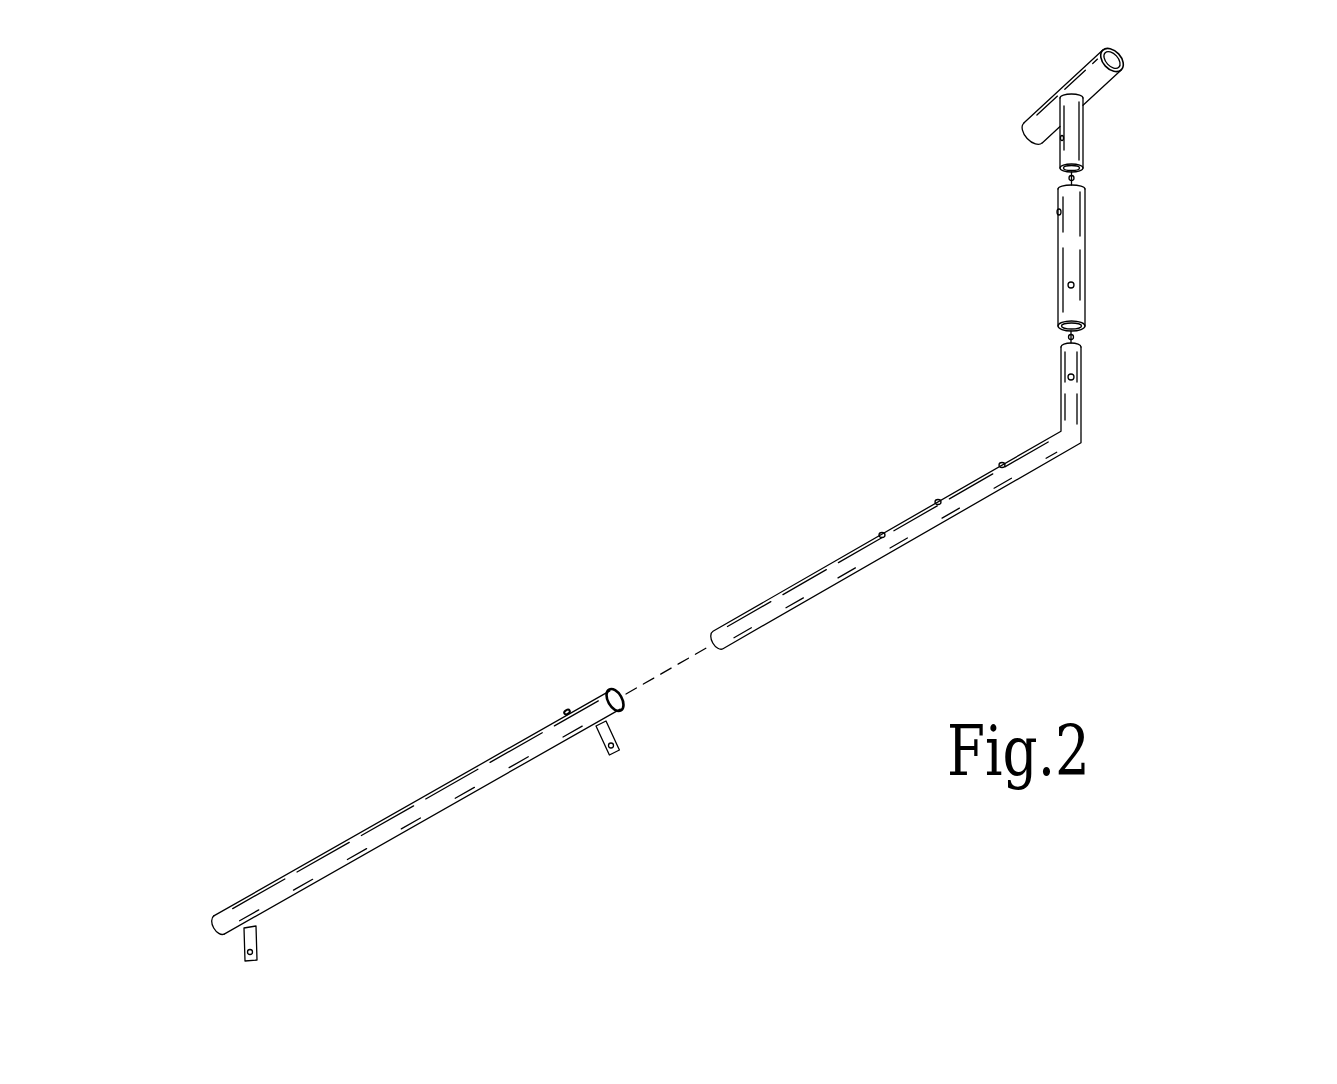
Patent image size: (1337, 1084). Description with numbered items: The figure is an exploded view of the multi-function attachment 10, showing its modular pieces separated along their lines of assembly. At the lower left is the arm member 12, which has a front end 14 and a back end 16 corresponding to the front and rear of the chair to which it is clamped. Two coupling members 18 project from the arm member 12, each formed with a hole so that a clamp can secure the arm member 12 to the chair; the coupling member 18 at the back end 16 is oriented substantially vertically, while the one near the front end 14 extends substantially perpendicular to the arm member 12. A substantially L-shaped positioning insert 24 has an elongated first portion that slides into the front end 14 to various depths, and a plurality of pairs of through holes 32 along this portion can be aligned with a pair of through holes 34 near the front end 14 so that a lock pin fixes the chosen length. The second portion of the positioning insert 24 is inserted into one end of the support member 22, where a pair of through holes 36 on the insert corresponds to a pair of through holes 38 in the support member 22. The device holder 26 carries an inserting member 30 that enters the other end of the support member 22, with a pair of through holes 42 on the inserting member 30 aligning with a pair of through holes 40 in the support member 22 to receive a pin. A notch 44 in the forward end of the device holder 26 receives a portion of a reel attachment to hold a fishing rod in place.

The attachment 10 is at (530, 274).
The arm member 12 is at (335, 842).
The front end 14 is at (608, 688).
The back end 16 is at (258, 887).
The coupling members 18 is at (617, 732).
The support member 22 is at (1085, 188).
The positioning insert 24 is at (1081, 438).
The device holder 26 is at (1093, 53).
The inserting member 30 is at (1083, 142).
The through holes 32 is at (1002, 465).
The through holes 34 is at (567, 712).
The through holes 36 is at (1073, 377).
The through holes 38 is at (1073, 285).
The through holes 40 is at (1059, 213).
The through holes 42 is at (1061, 140).
The notch 44 is at (1120, 73).